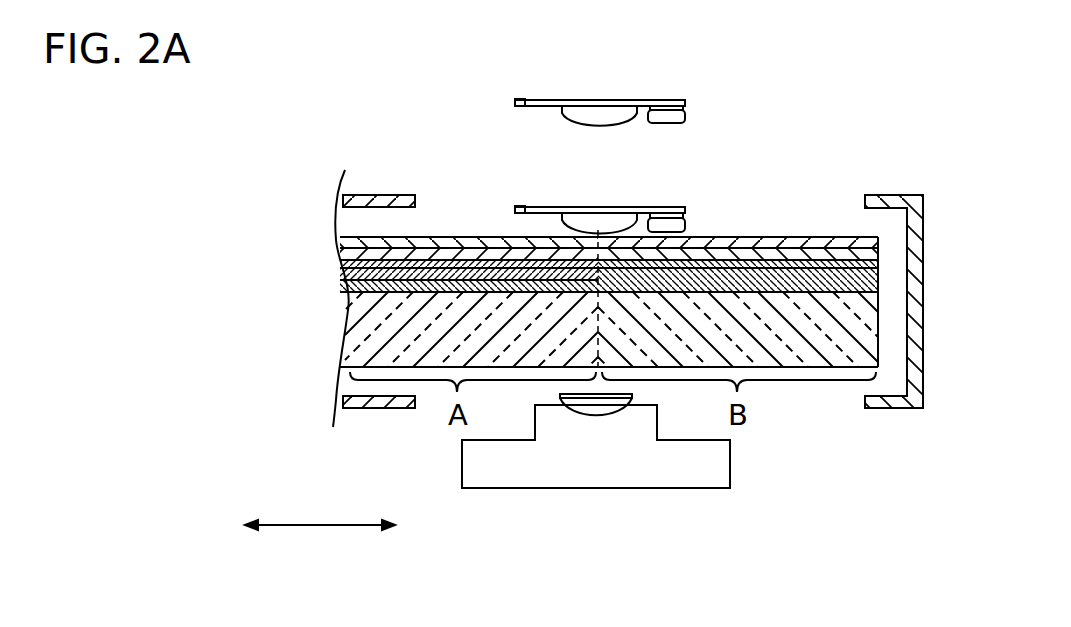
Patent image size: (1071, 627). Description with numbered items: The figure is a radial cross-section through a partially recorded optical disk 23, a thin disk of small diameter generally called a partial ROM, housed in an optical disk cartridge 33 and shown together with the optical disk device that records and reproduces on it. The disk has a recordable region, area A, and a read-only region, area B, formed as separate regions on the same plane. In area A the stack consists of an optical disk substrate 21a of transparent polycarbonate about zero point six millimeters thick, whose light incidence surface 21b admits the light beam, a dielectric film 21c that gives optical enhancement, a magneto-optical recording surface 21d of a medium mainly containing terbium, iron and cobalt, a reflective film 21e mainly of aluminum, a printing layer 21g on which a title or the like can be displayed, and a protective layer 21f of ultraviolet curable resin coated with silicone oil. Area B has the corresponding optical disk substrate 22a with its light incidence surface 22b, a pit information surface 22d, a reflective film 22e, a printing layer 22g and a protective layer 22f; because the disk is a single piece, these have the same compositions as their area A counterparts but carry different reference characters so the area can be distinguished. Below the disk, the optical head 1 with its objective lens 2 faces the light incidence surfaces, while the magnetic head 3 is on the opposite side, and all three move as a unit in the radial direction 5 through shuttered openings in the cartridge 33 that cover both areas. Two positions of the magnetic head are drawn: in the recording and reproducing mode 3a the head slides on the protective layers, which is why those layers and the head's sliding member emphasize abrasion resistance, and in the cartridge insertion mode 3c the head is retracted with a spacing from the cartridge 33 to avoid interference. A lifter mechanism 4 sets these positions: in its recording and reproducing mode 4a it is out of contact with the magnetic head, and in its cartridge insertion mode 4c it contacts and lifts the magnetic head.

The optical head 1 is at (665, 470).
The objective lens 2 is at (597, 420).
The magnetic head 3 is at (523, 151).
The recording and reproducing mode 3a is at (514, 208).
The cartridge insertion mode 3c is at (513, 106).
The lifter mechanism 4 is at (728, 136).
The recording and reproducing mode 4a is at (690, 217).
The cartridge insertion mode 4c is at (687, 108).
The radial direction 5 is at (320, 530).
The optical disk substrate 21a is at (345, 360).
The light incidence surface 21b is at (540, 338).
The dielectric film 21c is at (345, 273).
The magneto-optical recording surface 21d is at (347, 303).
The reflective film 21e is at (345, 275).
The protective layer 21f is at (338, 212).
The printing layer 21g is at (342, 253).
The optical disk substrate 22a is at (540, 398).
The light incidence surface 22b is at (540, 367).
The pit information surface 22d is at (566, 249).
The reflective film 22e is at (566, 180).
The protective layer 22f is at (562, 135).
The printing layer 22g is at (566, 157).
The partially recorded optical disk 23 is at (531, 263).
The optical disk cartridge 33 is at (375, 197).